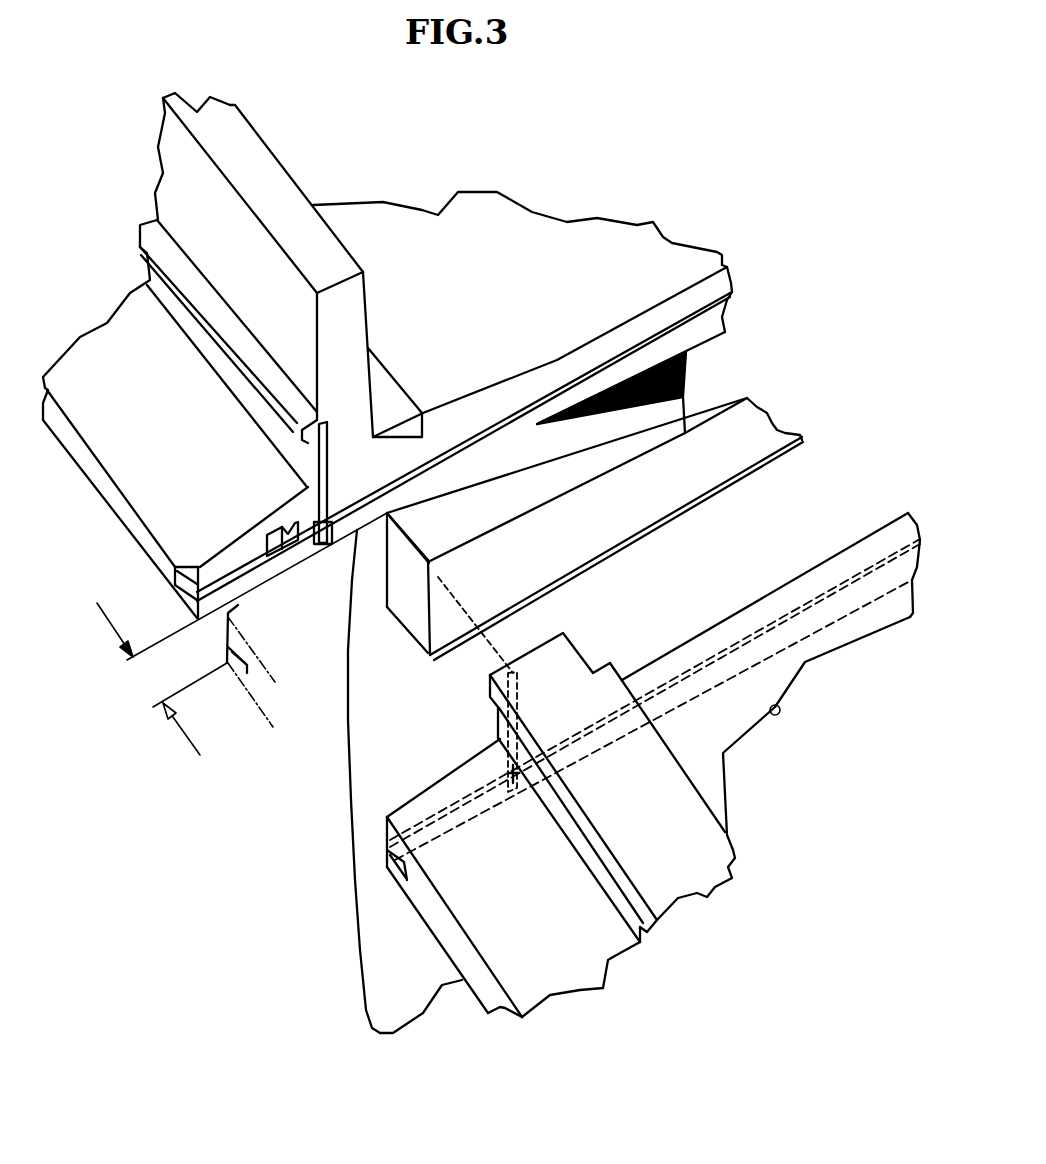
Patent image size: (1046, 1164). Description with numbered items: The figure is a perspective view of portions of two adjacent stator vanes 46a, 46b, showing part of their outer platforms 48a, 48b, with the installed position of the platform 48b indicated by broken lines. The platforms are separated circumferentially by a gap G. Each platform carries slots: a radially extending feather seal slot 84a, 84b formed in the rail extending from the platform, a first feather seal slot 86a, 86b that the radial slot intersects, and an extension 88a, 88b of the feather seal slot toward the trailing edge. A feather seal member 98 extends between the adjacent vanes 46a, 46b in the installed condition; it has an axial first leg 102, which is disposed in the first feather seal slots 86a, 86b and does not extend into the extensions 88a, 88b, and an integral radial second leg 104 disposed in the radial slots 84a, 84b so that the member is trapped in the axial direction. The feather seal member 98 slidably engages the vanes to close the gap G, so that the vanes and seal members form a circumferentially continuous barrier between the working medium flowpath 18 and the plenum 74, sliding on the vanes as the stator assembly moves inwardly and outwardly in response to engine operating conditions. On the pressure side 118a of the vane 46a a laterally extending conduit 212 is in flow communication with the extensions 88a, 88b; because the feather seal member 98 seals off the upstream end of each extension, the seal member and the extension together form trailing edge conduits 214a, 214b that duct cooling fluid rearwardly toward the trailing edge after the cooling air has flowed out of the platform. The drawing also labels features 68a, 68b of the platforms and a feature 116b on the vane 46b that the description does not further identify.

The plenum 74 is at (727, 93).
The outer platform 48a is at (497, 210).
The stator vane 46a is at (608, 235).
The pressure side 118a is at (717, 285).
The first feather seal slot 86a is at (727, 305).
The feather seal member 98 is at (770, 402).
The first beam end face 68a is at (350, 310).
The axial leg 102 is at (651, 509).
The radial leg 104 is at (413, 606).
The radial feather seal slot 84a is at (330, 472).
The extension slot 88a is at (308, 545).
The laterally extending conduit 212 is at (284, 524).
The trailing edge conduit 214a is at (173, 590).
The gap G is at (242, 634).
The stator vane 46b is at (782, 711).
The first feather seal slot 86b is at (777, 580).
The second shim plate 116b is at (833, 553).
The working medium flowpath 18 is at (713, 562).
The second beam rib 68b is at (700, 895).
The outer platform 48b is at (583, 963).
The trailing edge conduit 214b is at (405, 882).
The radial feather seal slot 84b is at (513, 660).
The extension slot 88b is at (478, 792).